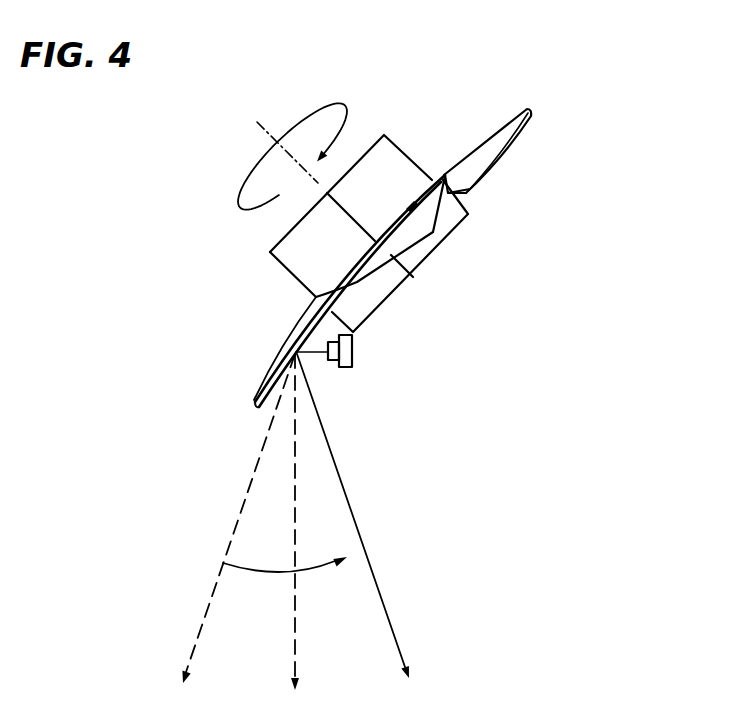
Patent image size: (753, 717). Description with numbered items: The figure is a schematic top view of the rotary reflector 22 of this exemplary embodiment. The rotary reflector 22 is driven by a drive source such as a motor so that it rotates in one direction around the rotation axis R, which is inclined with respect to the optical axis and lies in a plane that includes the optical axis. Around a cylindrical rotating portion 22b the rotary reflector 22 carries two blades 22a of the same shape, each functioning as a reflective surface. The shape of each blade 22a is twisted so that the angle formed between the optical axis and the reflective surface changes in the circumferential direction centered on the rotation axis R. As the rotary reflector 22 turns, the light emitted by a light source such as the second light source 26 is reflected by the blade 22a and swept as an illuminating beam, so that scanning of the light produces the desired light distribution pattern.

The rotary reflector 22 is at (254, 275).
The blade 22a is at (438, 215).
The cylindrical rotating portion 22b is at (429, 172).
The second light source 26 is at (353, 357).
The rotation axis R is at (290, 156).